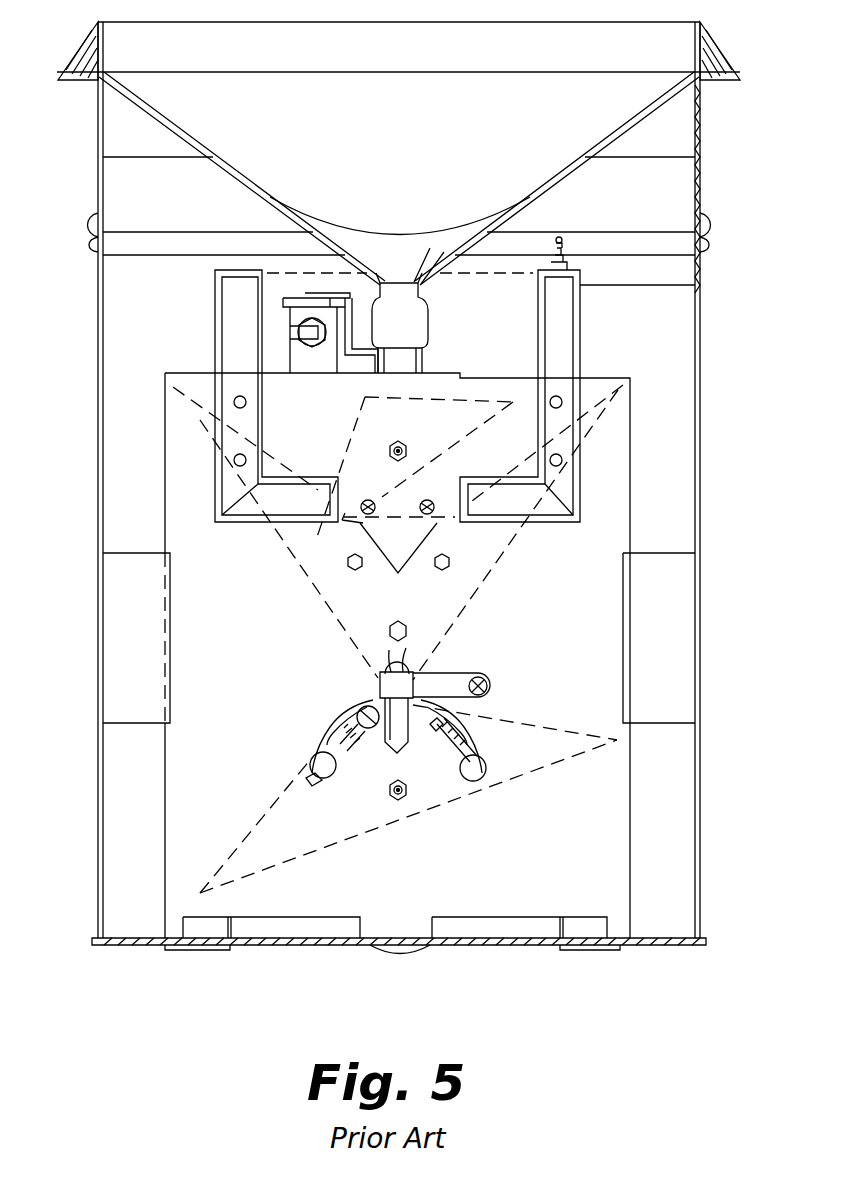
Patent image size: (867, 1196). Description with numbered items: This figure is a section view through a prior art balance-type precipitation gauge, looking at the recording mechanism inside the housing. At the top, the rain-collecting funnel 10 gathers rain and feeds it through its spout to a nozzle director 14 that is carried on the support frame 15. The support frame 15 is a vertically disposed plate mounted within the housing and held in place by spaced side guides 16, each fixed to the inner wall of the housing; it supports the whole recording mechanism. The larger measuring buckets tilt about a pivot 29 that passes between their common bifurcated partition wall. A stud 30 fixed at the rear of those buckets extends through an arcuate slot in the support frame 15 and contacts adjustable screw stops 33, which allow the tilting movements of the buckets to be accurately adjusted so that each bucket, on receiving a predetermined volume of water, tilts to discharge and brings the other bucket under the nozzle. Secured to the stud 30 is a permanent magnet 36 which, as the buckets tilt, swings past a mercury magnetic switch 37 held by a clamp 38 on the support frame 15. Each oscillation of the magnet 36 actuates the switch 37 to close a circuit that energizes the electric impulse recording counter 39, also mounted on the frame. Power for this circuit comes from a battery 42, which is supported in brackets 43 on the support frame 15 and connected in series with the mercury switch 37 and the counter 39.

The rain-collecting funnel 10 is at (452, 143).
The nozzle director 14 is at (433, 362).
The support frame 15 is at (545, 601).
The side guides 16 is at (141, 642).
The pivot 29 is at (405, 792).
The stud 30 is at (360, 712).
The adjustable screw stops 33 is at (332, 741).
The permanent magnet 36 is at (368, 700).
The mercury magnetic switch 37 is at (397, 733).
The clamp 38 is at (437, 683).
The electric impulse recording counter 39 is at (512, 348).
The battery 42 is at (497, 273).
The brackets 43 is at (230, 345).